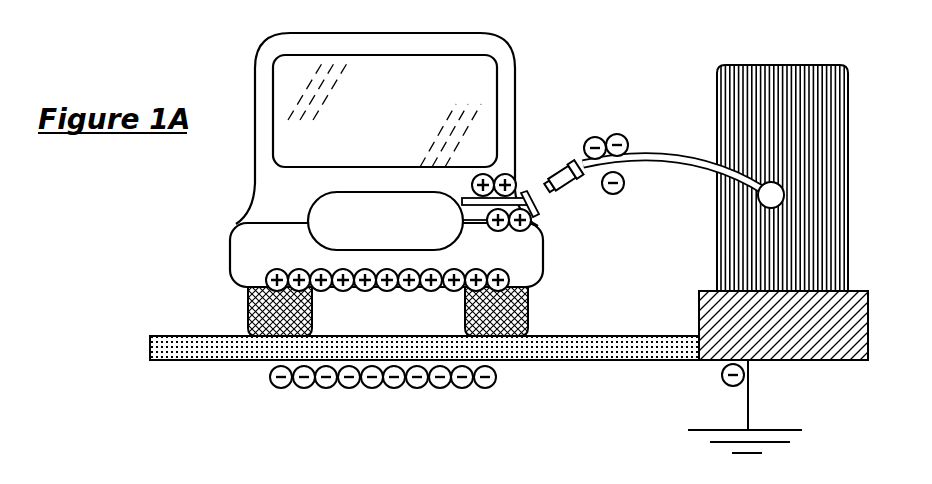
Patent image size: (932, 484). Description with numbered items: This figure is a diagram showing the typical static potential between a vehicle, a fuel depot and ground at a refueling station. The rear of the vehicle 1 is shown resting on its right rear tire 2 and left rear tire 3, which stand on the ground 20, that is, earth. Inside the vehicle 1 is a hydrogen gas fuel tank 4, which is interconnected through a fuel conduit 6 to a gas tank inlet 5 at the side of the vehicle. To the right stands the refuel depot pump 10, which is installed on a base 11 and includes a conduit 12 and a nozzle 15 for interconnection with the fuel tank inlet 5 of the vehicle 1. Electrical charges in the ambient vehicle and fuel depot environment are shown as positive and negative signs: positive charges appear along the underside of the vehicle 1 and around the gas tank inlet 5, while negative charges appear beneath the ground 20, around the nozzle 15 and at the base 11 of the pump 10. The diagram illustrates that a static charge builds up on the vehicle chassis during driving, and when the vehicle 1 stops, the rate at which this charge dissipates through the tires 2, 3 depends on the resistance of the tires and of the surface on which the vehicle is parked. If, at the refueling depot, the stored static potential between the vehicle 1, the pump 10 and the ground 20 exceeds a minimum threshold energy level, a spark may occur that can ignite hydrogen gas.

The vehicle 1 is at (517, 78).
The right rear tire 2 is at (530, 310).
The left rear tire 3 is at (250, 315).
The hydrogen gas fuel tank 4 is at (388, 220).
The gas tank inlet 5 is at (527, 192).
The fuel conduit 6 is at (463, 195).
The refuel depot pump 10 is at (849, 103).
The base 11 is at (850, 290).
The conduit 12 is at (672, 155).
The nozzle 15 is at (568, 193).
The ground 20 is at (175, 360).